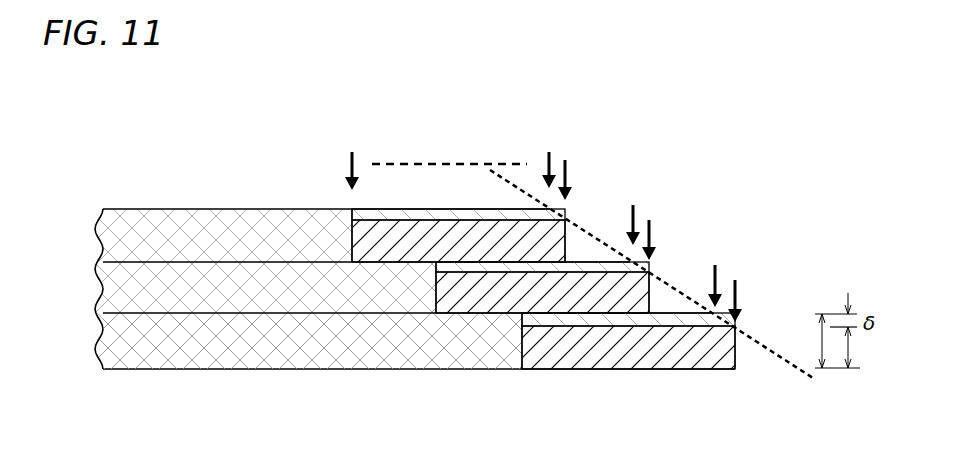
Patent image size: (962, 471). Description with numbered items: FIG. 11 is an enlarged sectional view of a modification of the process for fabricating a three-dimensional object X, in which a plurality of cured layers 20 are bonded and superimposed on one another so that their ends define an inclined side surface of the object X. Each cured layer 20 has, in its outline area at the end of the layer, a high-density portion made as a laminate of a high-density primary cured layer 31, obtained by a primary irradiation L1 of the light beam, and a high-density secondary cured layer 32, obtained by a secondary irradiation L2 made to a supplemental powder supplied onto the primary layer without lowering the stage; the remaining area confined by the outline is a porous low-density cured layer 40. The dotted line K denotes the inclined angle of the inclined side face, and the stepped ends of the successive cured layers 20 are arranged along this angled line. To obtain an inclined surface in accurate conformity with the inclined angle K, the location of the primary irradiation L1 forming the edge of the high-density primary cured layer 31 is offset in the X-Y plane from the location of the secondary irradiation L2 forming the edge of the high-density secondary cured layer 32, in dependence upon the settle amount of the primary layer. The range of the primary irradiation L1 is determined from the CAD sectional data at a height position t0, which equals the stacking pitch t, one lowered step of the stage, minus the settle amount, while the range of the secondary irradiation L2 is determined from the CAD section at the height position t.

The cured layer 20 is at (240, 206).
The high-density primary cured layer 31 is at (590, 300).
The high-density secondary cured layer 32 is at (580, 262).
The low-density cured layer 40 is at (352, 357).
The inclined angle K is at (500, 174).
The three-dimensional object X is at (220, 372).
The primary irradiation L1 is at (661, 228).
The secondary irradiation L2 is at (533, 216).
The stacking pitch t is at (831, 341).
The height position t0 is at (854, 347).